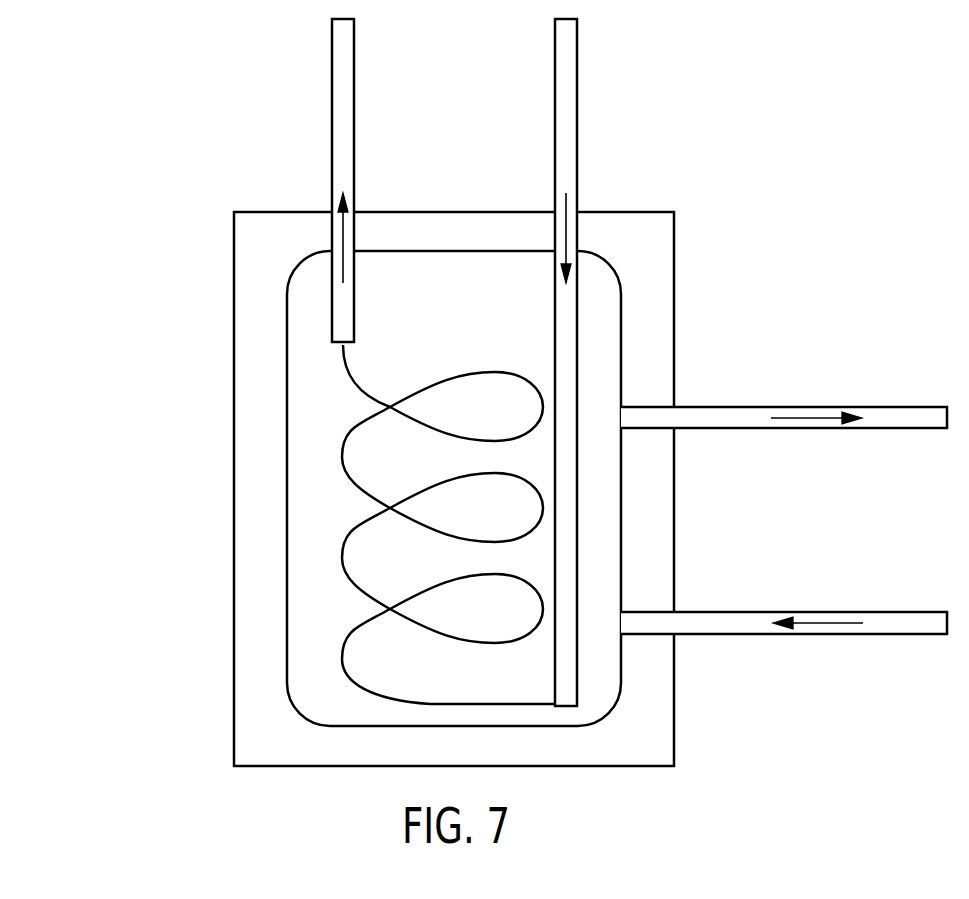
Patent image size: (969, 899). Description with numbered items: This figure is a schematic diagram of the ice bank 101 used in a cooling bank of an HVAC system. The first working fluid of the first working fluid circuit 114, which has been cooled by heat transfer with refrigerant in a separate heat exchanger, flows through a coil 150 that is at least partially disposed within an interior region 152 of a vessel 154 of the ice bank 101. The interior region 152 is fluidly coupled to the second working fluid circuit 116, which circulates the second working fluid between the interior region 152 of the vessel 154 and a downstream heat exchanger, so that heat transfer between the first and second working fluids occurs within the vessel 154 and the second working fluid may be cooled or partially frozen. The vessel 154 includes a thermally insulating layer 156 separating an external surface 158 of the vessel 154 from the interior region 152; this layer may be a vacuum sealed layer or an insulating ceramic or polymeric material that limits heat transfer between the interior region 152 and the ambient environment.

The ice bank 101 is at (95, 199).
The first working fluid circuit 114 is at (332, 100).
The second working fluid circuit 116 is at (866, 407).
The coil 150 is at (353, 533).
The interior region 152 is at (323, 404).
The vessel 154 is at (170, 450).
The thermally insulating layer 156 is at (258, 625).
The external surface 158 is at (258, 212).